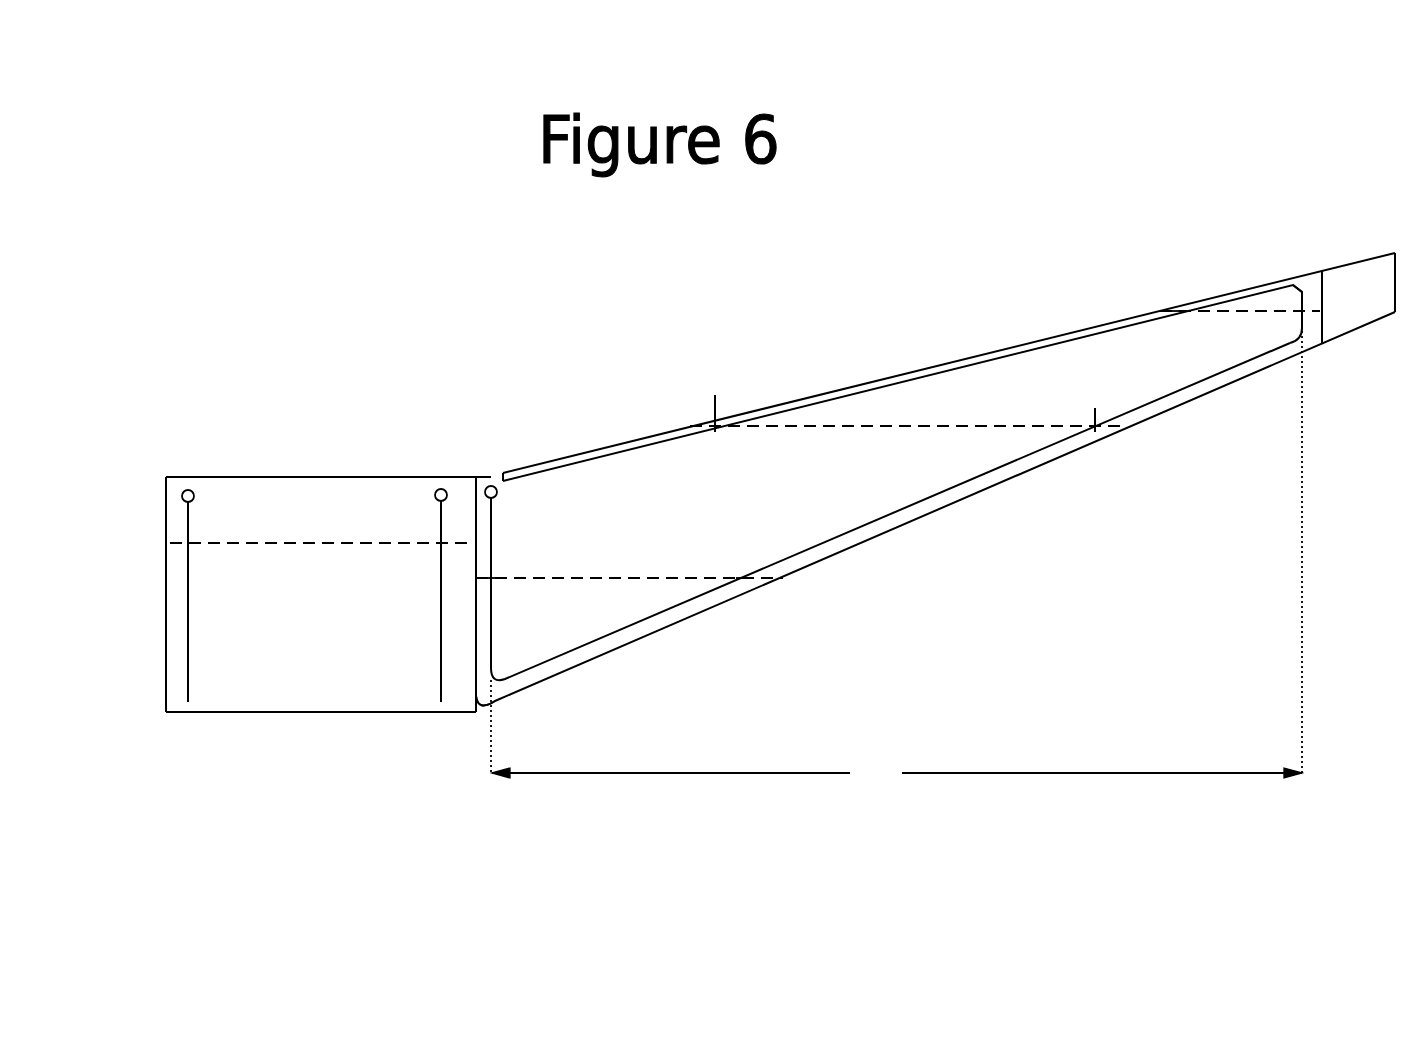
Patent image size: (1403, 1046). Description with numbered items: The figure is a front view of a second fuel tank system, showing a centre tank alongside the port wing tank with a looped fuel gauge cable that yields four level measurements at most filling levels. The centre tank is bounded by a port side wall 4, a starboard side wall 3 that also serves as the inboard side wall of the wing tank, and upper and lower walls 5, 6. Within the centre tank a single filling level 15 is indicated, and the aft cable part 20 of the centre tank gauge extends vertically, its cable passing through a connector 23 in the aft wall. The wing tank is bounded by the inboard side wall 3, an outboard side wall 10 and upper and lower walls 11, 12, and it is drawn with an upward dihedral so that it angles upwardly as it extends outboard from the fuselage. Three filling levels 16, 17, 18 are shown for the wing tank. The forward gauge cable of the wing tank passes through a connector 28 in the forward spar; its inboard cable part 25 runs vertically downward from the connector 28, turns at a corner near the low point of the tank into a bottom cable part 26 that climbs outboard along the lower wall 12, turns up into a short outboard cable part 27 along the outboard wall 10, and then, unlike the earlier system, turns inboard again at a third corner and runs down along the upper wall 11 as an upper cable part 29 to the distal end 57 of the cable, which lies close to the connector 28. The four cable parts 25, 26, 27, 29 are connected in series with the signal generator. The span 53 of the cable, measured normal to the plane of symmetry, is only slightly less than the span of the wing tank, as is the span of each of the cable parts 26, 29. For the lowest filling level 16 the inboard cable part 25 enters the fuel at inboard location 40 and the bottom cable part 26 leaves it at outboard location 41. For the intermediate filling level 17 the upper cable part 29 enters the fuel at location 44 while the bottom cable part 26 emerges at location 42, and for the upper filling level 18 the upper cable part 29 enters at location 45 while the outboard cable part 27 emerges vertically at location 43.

The inboard side wall 3 is at (477, 678).
The port side wall 4 is at (166, 590).
The upper wall 5 is at (307, 475).
The lower wall 6 is at (330, 712).
The outboard side wall 10 is at (1320, 322).
The upper wall 11 is at (873, 378).
The lower wall 12 is at (1180, 408).
The filling level 15 is at (330, 543).
The filling level 16 is at (652, 578).
The intermediate filling level 17 is at (947, 426).
The upper filling level 18 is at (1243, 311).
The aft cable part 20 is at (188, 685).
The connector 23 is at (183, 489).
The inboard cable part 25 is at (491, 556).
The bottom cable part 26 is at (625, 628).
The outboard cable part 27 is at (1300, 310).
The connector 28 is at (488, 476).
The upper cable part 29 is at (1102, 330).
The inboard location 40 is at (491, 577).
The outboard location 41 is at (742, 578).
The location 42 is at (1095, 408).
The location 43 is at (1300, 312).
The location 44 is at (715, 395).
The location 45 is at (1182, 311).
The span of the cable 53 is at (896, 548).
The distal end 57 is at (503, 473).